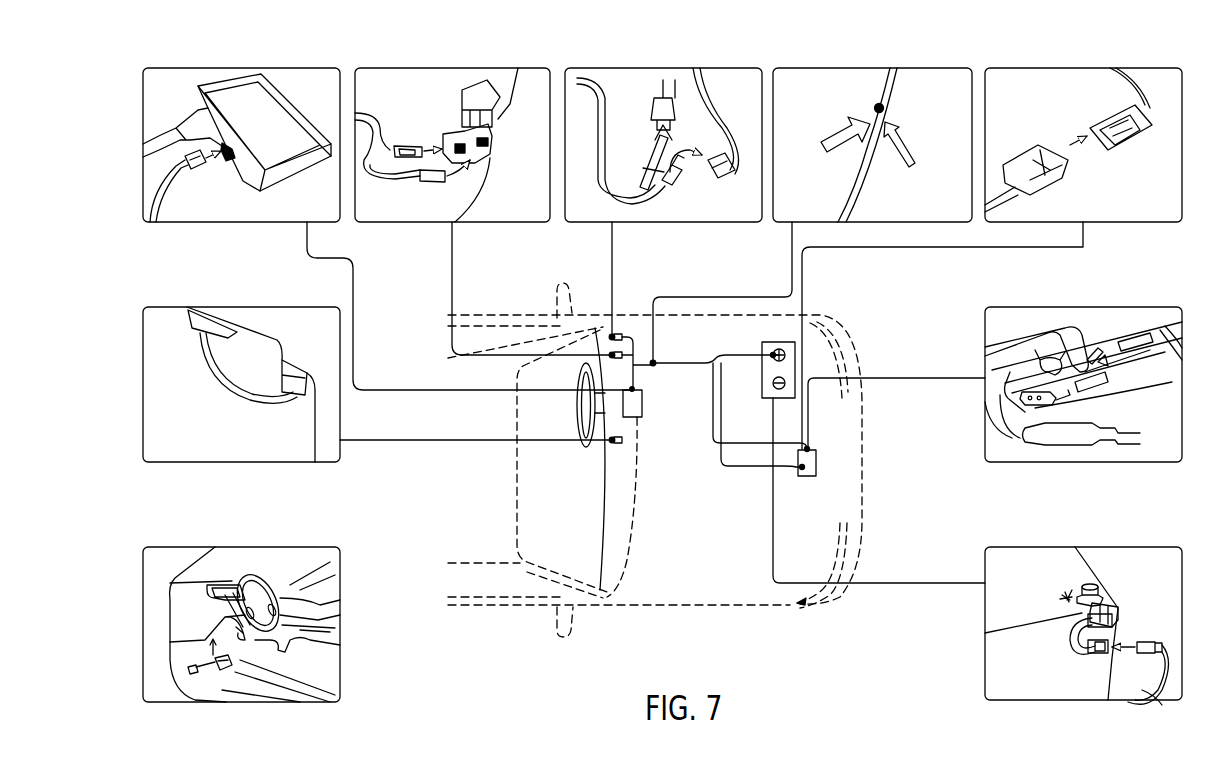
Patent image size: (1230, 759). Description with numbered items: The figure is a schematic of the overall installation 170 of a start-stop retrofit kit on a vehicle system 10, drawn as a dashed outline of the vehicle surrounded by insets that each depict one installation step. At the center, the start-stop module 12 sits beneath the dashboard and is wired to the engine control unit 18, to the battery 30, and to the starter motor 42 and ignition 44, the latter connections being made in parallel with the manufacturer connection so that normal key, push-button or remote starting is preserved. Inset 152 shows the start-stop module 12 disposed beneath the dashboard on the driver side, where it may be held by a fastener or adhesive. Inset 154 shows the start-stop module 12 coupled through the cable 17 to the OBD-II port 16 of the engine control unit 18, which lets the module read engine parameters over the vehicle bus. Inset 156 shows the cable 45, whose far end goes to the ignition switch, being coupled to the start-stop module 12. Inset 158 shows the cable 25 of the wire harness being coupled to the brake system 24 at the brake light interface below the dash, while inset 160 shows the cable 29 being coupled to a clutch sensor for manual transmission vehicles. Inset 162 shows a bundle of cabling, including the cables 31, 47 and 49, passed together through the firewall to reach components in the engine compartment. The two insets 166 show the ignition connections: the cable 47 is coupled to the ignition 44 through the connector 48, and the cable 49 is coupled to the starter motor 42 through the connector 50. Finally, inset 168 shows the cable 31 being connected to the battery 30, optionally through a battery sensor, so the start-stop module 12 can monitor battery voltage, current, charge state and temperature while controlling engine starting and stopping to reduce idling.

The vehicle system 10 is at (688, 612).
The start-stop module 12 is at (192, 329).
The OBD-II port 16 is at (301, 403).
The cable 17 is at (205, 379).
The engine control unit 18 is at (271, 345).
The brake system 24 is at (463, 93).
The cable 25 is at (361, 114).
The cable 29 is at (605, 98).
The battery 30 is at (777, 340).
The cable 31 is at (1140, 688).
The starter motor 42 is at (817, 470).
The ignition 44 is at (1108, 110).
The cable 45 is at (164, 190).
The cable 47 is at (1003, 203).
The connector 48 is at (1020, 165).
The cable 49 is at (1178, 346).
The connector 50 is at (1107, 380).
The illustration of disposing the start-stop module 152 is at (274, 544).
The illustration of coupling to the engine control unit 154 is at (274, 304).
The illustration of coupling to the switch 156 is at (248, 64).
The illustration of coupling to the brake system 158 is at (450, 64).
The illustration of coupling to the clutch sensor 160 is at (630, 64).
The illustration of passing wires through the firewall 162 is at (855, 64).
The illustrations of connecting to the ignition system 166 is at (1081, 64).
The illustration of coupling to the battery 168 is at (1062, 543).
The installation kit 170 is at (332, 36).